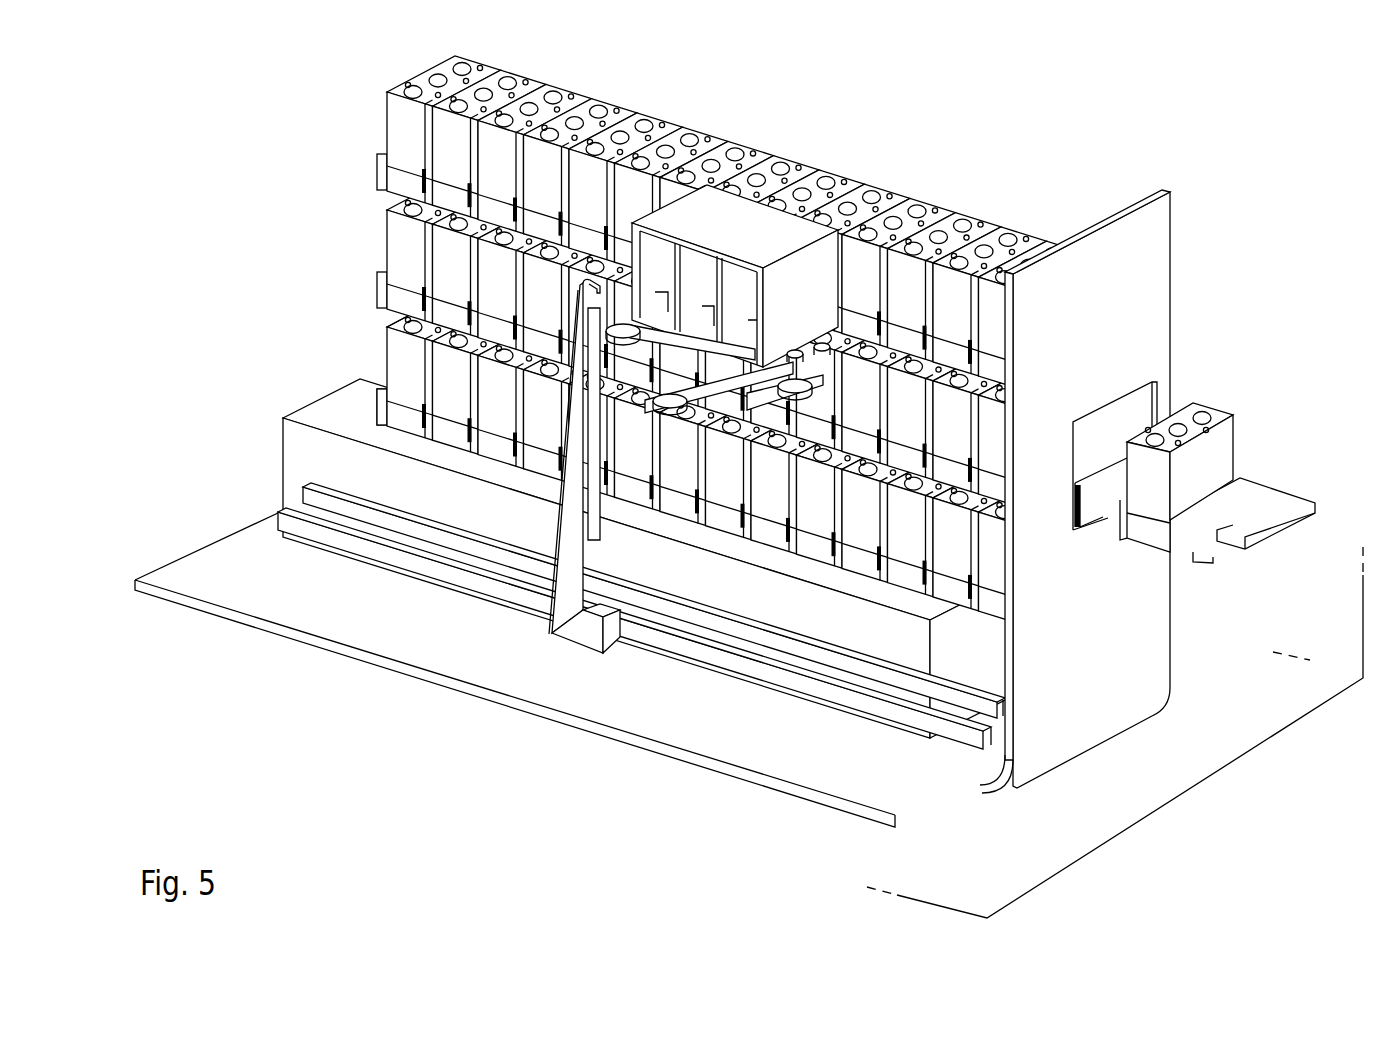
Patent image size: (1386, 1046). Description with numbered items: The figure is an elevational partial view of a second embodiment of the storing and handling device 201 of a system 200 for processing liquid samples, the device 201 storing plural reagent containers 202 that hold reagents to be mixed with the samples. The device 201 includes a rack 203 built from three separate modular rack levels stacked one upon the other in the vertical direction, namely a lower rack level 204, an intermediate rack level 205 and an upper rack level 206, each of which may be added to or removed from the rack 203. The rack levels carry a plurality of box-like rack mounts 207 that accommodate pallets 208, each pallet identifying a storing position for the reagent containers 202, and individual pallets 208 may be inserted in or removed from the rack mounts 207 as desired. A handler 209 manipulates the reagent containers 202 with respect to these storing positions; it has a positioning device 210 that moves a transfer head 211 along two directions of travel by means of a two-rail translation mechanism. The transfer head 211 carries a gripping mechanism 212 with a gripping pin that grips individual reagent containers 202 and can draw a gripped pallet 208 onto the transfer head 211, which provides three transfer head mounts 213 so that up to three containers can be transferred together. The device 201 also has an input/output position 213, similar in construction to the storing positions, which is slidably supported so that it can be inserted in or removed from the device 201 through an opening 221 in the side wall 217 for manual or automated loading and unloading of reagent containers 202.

The system 200 is at (1243, 758).
The storing and handling device 201 is at (1049, 150).
The reagent containers 202 is at (860, 200).
The rack 203 is at (372, 121).
The lower rack level 204 is at (372, 355).
The intermediate rack level 205 is at (372, 240).
The upper rack level 206 is at (734, 223).
The rack mounts 207 is at (500, 445).
The pallets 208 is at (718, 513).
The handler 209 is at (390, 326).
The positioning device 210 is at (555, 542).
The transfer head 211 is at (608, 382).
The gripping mechanism 212 is at (743, 352).
The transfer head mounts / input/output position 213 is at (1236, 472).
The side wall 217 is at (1140, 190).
The opening 221 is at (1108, 400).